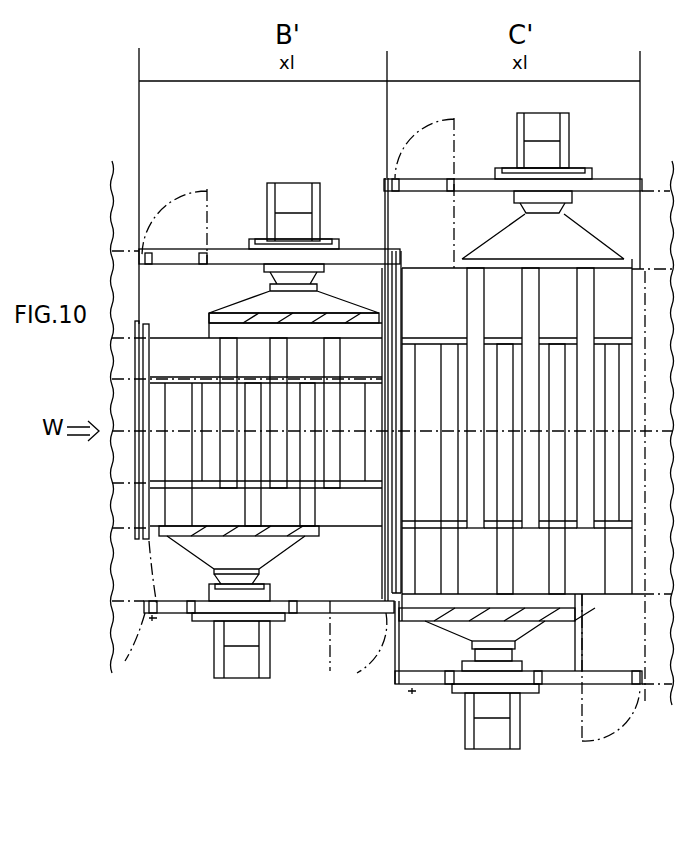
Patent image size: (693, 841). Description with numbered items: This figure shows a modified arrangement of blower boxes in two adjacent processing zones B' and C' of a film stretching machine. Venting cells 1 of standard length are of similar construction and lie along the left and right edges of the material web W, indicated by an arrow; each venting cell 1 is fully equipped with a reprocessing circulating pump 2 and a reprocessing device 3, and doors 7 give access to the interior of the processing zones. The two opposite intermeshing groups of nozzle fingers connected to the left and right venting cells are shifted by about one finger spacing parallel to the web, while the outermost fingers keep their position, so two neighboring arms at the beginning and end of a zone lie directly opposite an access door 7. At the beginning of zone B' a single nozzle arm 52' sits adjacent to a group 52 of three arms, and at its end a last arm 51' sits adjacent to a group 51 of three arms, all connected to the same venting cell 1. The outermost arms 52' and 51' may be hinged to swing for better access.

The venting cell 1 is at (226, 208).
The reprocessing circulating pump 2 is at (298, 190).
The reprocessing device 3 is at (252, 310).
The door 7 is at (173, 255).
The group of three nozzle fingers or arms 51 is at (292, 345).
The last nozzle finger or arm 51' is at (484, 398).
The group of three nozzle fingers or arms 52 is at (269, 492).
The single nozzle finger or arm 52' is at (110, 430).